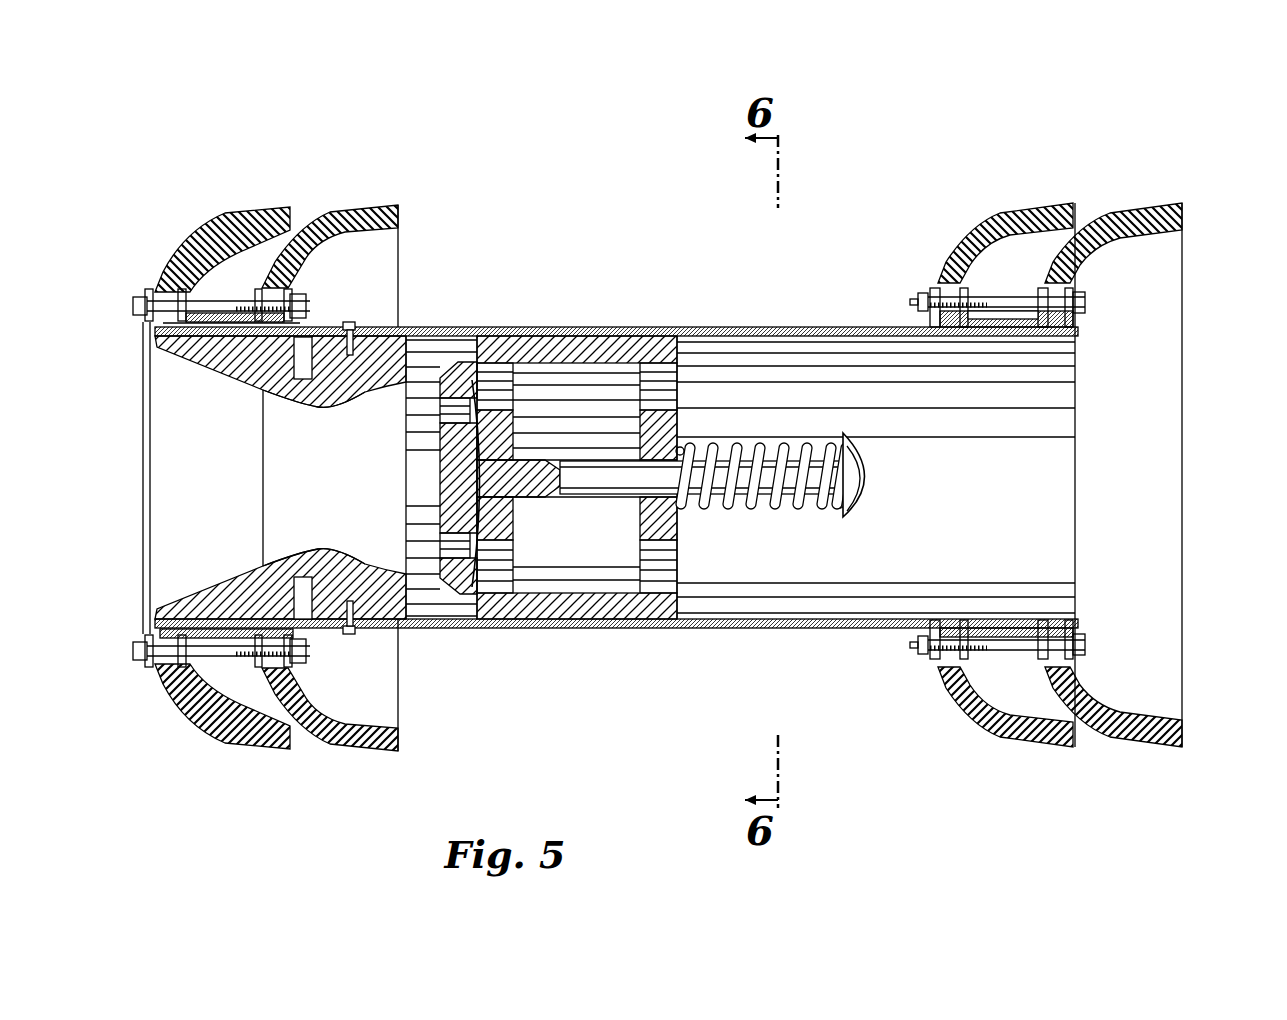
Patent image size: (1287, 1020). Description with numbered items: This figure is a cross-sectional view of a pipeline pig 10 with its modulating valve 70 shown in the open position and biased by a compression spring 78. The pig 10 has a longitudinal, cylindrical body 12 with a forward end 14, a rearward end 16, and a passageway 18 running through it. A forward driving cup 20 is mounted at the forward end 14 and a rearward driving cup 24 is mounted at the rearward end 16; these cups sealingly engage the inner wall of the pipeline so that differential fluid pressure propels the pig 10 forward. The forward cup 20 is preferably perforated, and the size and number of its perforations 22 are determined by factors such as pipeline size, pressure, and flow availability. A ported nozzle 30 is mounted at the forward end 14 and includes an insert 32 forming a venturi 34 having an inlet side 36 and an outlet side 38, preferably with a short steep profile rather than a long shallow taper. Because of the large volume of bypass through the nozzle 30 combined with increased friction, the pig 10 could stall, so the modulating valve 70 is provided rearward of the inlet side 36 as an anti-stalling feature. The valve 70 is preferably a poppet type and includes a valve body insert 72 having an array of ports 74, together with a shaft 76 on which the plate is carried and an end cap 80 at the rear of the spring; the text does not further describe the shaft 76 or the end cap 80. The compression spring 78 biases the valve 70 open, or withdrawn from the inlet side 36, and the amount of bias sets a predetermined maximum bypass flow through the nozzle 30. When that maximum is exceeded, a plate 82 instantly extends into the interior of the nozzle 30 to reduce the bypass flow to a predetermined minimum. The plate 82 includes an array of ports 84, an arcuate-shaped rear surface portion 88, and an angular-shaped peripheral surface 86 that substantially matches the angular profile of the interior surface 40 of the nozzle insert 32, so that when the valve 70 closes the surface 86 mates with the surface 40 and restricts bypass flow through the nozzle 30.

The pipeline pig 10 is at (632, 266).
The cylindrical body 12 is at (760, 327).
The forward end 14 is at (131, 280).
The rearward end 16 is at (1196, 275).
The passageway 18 is at (815, 383).
The forward driving cup 20 is at (273, 190).
The perforations 22 is at (207, 712).
The rearward driving cup 24 is at (1003, 196).
The ported nozzle 30 is at (124, 403).
The nozzle insert 32 is at (337, 368).
The venturi 34 is at (322, 487).
The inlet side 36 is at (406, 497).
The outlet side 38 is at (262, 476).
The interior surface 40 is at (410, 378).
The modulating valve 70 is at (820, 528).
The valve body insert 72 is at (556, 344).
The ports 74 is at (672, 386).
The shaft 76 is at (593, 487).
The compression spring 78 is at (758, 500).
The end cap 80 is at (872, 475).
The plate 82 is at (437, 596).
The ports 84 is at (448, 545).
The angular-shaped peripheral surface 86 is at (455, 576).
The arcuate-shaped rear surface portion 88 is at (486, 385).